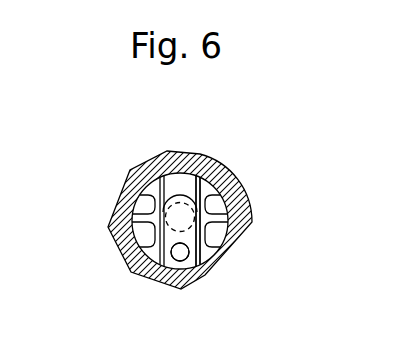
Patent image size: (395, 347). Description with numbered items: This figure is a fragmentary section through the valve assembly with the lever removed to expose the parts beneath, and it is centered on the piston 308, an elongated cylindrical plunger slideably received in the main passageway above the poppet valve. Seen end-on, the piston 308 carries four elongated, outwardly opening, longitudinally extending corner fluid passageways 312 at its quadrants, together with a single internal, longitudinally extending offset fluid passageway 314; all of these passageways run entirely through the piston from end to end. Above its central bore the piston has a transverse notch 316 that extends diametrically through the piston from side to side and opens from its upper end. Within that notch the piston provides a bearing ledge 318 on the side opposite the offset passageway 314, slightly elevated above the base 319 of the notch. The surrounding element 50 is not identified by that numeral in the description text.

The catheter assembly 50 is at (176, 172).
The piston 308 is at (148, 172).
The corner fluid passageways 312 is at (146, 203).
The offset fluid passageway 314 is at (175, 262).
The transverse notch 316 is at (186, 254).
The bearing ledge 318 is at (178, 181).
The base of the notch 319 is at (212, 184).